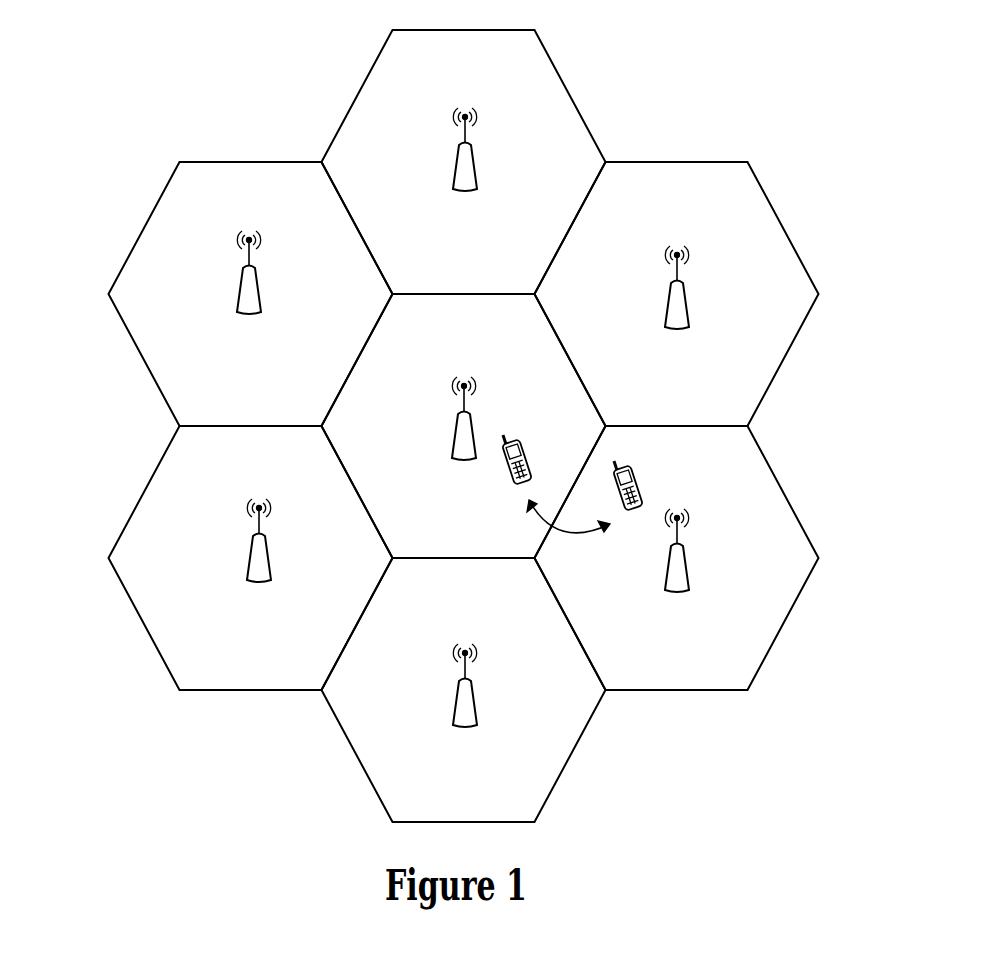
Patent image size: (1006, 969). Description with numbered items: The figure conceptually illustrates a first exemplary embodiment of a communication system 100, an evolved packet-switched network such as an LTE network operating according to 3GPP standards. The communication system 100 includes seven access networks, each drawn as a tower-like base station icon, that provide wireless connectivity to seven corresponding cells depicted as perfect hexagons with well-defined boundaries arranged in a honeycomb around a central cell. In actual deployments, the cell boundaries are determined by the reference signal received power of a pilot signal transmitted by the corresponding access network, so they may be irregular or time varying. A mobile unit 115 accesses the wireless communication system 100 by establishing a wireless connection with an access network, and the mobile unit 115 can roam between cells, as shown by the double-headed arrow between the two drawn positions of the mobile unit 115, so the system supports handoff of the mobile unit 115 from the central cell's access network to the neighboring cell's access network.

The communication system 100 is at (875, 127).
The mobile unit 115 is at (531, 462).